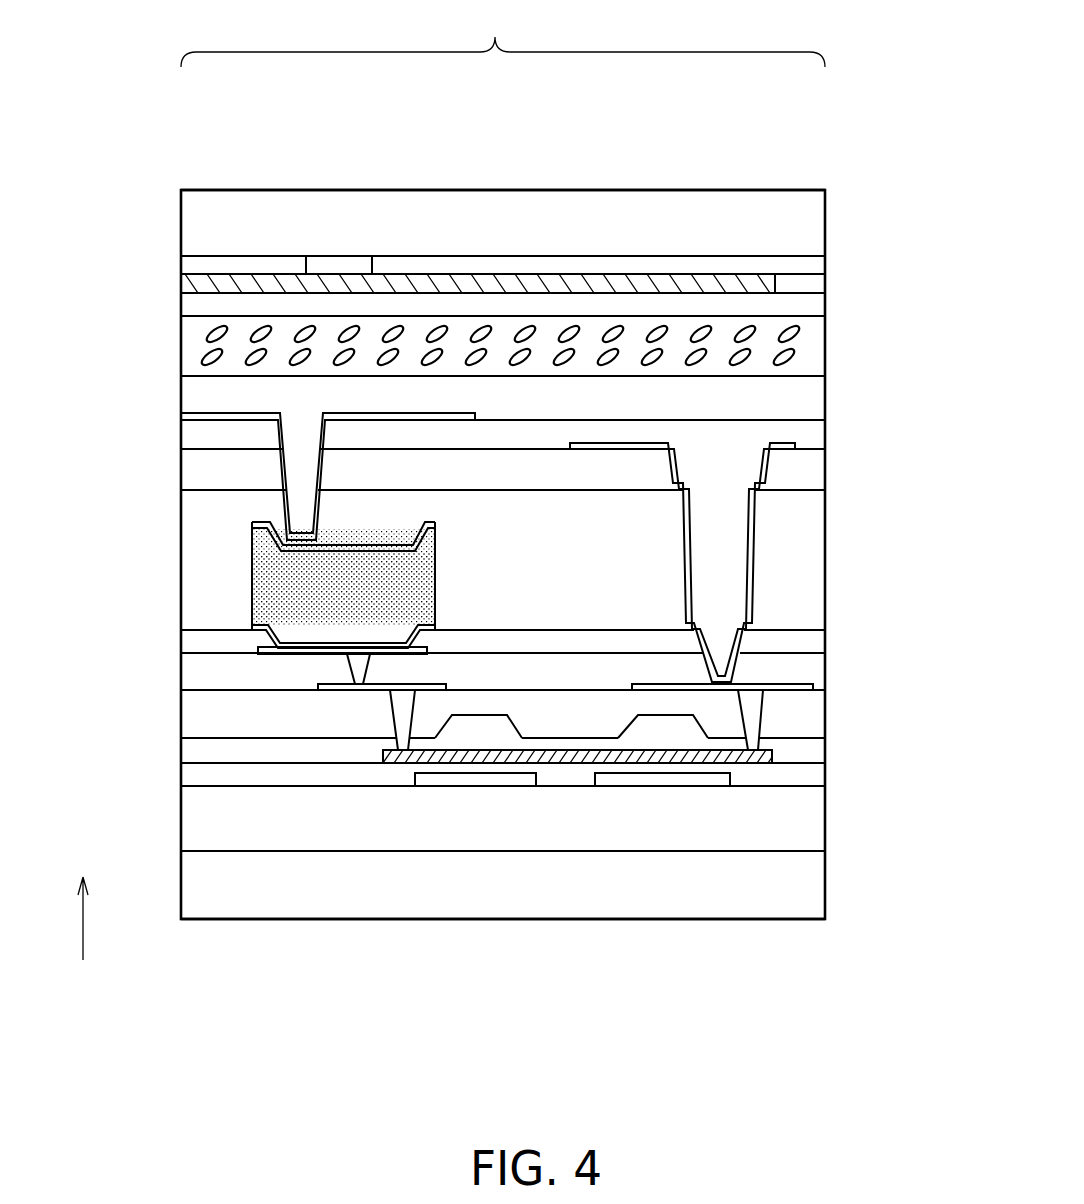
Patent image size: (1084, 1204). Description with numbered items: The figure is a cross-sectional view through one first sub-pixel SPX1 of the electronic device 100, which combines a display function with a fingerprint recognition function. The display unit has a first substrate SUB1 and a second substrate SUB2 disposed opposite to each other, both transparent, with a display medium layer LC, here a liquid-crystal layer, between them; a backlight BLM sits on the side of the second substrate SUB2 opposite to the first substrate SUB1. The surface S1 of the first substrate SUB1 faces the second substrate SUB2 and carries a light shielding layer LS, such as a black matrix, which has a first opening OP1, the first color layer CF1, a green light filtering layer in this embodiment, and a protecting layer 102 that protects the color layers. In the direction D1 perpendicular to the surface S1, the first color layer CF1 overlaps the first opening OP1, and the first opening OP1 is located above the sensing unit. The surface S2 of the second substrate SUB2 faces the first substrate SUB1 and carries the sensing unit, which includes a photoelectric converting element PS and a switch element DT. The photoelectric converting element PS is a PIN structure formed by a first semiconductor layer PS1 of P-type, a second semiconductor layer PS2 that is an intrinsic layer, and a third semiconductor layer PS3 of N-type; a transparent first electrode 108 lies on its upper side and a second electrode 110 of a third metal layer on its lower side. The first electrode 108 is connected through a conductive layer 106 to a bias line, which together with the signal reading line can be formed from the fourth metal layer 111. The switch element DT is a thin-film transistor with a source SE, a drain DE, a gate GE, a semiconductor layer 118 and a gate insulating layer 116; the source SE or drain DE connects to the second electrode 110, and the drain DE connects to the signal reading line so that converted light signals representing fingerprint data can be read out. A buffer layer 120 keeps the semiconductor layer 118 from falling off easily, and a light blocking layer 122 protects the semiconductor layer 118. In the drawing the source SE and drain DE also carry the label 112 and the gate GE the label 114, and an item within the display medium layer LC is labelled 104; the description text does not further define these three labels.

The electronic device 100 is at (800, 158).
The protecting layer 102 is at (190, 300).
The liquid crystal molecules 104 is at (800, 338).
The conductive layer 106 is at (197, 413).
The first electrode 108 is at (250, 523).
The second electrode 110 is at (258, 650).
The fourth metal layer 111 is at (758, 550).
The source/drain electrode layer 112 is at (510, 697).
The gate electrode 114 is at (554, 849).
The gate insulating layer 116 is at (538, 848).
The semiconductor layer 118 is at (773, 757).
The buffer layer 120 is at (502, 877).
The light blocking layer 122 is at (427, 780).
The first sub-pixel SPX1 is at (503, 33).
The first opening OP1 is at (373, 262).
The first substrate SUB1 is at (805, 227).
The light shielding layer LS is at (537, 209).
The first color layer CF1 is at (776, 283).
The display medium layer LC is at (535, 347).
The photoelectric converting element PS is at (240, 579).
The first semiconductor layer PS1 is at (250, 534).
The second semiconductor layer PS2 is at (262, 573).
The third semiconductor layer PS3 is at (250, 628).
The source SE is at (318, 687).
The drain DE is at (810, 685).
The gate GE is at (482, 722).
The switch element DT is at (569, 798).
The surface of the first substrate S1 is at (195, 256).
The surface of the second substrate S2 is at (197, 788).
The direction D1 is at (81, 901).
The second substrate SUB2 is at (808, 815).
The backlight BLM is at (810, 886).